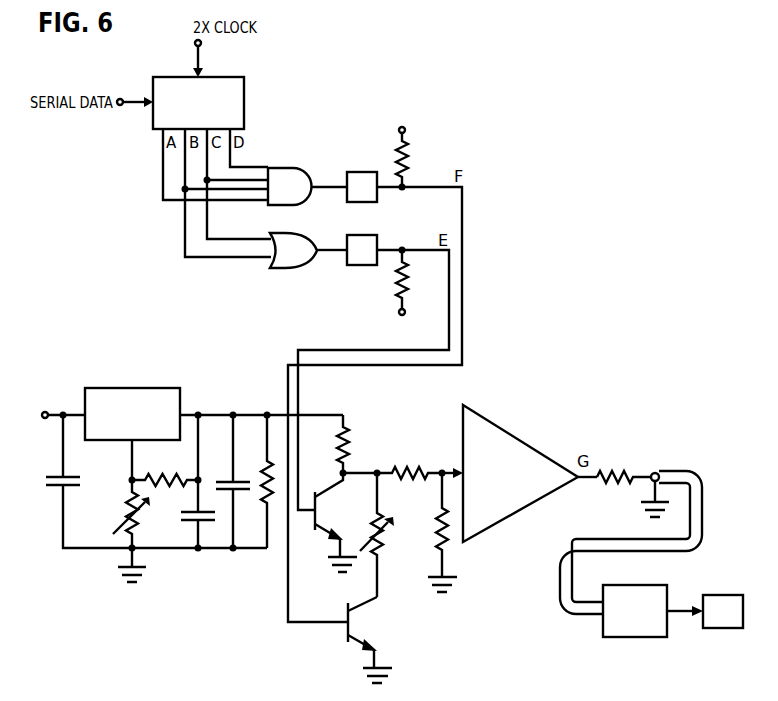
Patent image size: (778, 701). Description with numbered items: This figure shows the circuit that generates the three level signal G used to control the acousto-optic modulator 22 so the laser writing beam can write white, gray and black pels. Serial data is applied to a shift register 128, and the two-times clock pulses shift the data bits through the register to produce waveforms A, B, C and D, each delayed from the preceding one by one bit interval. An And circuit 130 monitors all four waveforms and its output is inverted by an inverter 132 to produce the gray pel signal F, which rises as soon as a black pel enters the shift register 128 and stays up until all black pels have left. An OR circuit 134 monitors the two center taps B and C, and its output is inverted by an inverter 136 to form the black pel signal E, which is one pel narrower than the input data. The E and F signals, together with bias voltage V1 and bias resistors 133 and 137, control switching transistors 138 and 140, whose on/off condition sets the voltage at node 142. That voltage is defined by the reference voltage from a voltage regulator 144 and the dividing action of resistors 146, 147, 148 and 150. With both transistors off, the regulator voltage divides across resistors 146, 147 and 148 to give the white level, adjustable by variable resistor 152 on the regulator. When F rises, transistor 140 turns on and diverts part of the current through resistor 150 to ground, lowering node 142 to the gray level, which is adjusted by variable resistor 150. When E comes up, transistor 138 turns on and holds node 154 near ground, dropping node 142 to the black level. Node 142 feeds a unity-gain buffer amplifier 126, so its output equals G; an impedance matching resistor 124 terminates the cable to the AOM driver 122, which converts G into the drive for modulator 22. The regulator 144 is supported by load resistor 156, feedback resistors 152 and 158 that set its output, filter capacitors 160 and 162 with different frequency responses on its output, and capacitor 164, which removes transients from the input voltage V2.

The shift register 128 is at (247, 86).
The And circuit 130 is at (280, 165).
The inverter 132 is at (353, 165).
The bias resistor 133 is at (408, 158).
The OR circuit 134 is at (289, 233).
The inverter 136 is at (363, 235).
The bias resistor 137 is at (396, 288).
The voltage regulator 144 is at (140, 387).
The capacitor 164 is at (59, 474).
The variable resistor 152 is at (126, 514).
The resistor 158 is at (152, 470).
The capacitor 162 is at (190, 522).
The capacitor 160 is at (222, 479).
The load resistor 156 is at (264, 470).
The resistor 146 is at (352, 437).
The node 154 is at (340, 472).
The resistor 147 is at (408, 456).
The node 142 is at (441, 466).
The switching transistor 138 is at (320, 507).
The variable resistor 150 is at (390, 538).
The resistor 148 is at (447, 549).
The switching transistor 140 is at (355, 620).
The buffer amplifier 126 is at (510, 431).
The resistor 124 is at (618, 466).
The AOM driver 122 is at (660, 585).
The acousto-optic modulator 22 is at (720, 595).